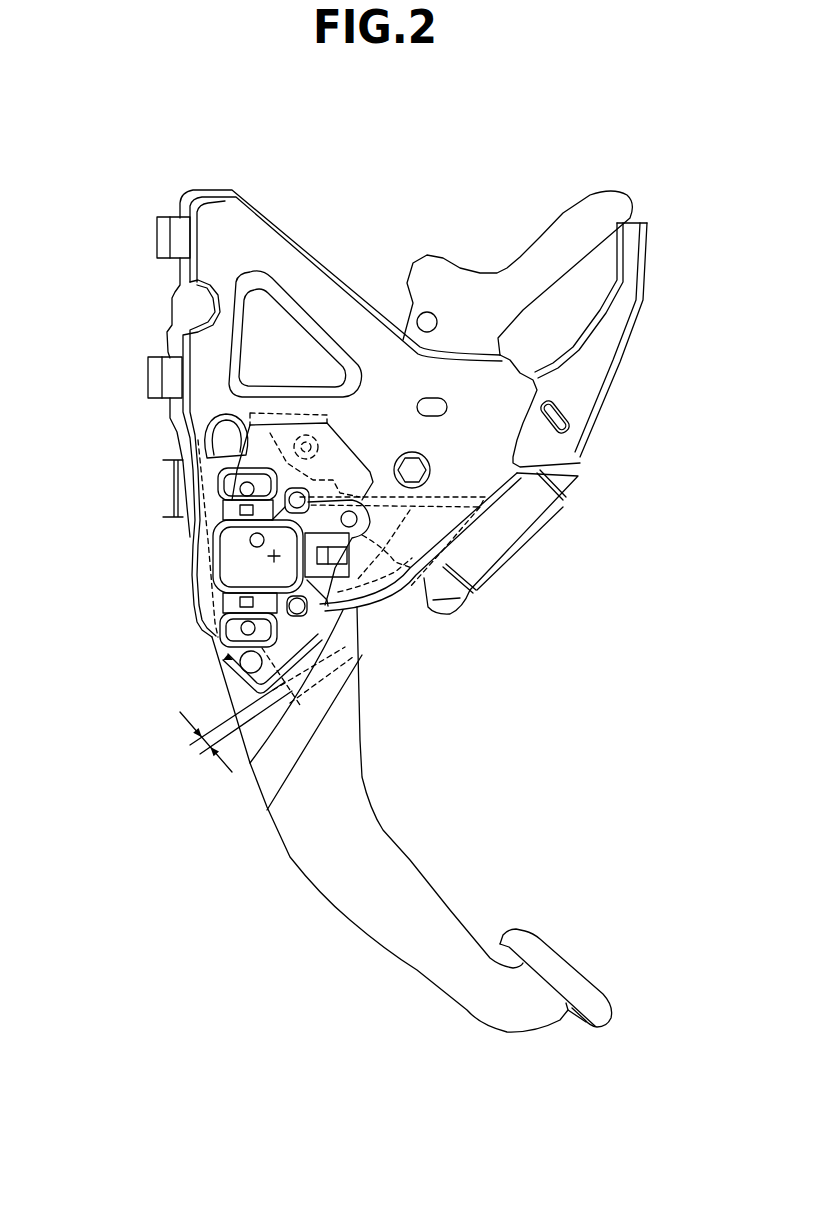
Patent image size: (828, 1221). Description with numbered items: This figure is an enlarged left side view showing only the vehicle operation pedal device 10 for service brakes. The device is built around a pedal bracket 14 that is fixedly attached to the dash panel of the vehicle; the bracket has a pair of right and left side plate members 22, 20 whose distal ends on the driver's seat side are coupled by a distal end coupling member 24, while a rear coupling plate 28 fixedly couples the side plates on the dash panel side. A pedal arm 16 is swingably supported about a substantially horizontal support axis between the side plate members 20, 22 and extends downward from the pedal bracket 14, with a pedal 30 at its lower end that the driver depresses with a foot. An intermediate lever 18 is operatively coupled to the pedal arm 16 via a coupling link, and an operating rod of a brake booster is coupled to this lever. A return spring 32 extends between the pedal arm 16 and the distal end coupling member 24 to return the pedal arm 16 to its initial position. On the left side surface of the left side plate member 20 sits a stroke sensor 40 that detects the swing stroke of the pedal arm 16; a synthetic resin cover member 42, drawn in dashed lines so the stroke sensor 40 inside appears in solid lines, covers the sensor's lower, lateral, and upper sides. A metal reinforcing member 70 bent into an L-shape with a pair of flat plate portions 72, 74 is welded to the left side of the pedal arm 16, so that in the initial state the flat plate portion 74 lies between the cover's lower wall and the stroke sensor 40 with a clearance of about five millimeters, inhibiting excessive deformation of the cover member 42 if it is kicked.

The operation pedal device 10 is at (630, 122).
The pedal bracket 14 is at (172, 162).
The pedal arm 16 is at (363, 913).
The intermediate lever 18 is at (513, 279).
The left side plate member 20 is at (290, 265).
The right side plate member 22 is at (290, 265).
The distal end coupling member 24 is at (590, 370).
The rear coupling plate 28 is at (183, 478).
The pedal 30 is at (570, 972).
The return spring 32 is at (470, 582).
The stroke sensor 40 is at (200, 545).
The cover member 42 is at (393, 647).
The reinforcing member 70 is at (198, 663).
The flat plate portion 72 is at (232, 678).
The flat plate portion 74 is at (303, 678).